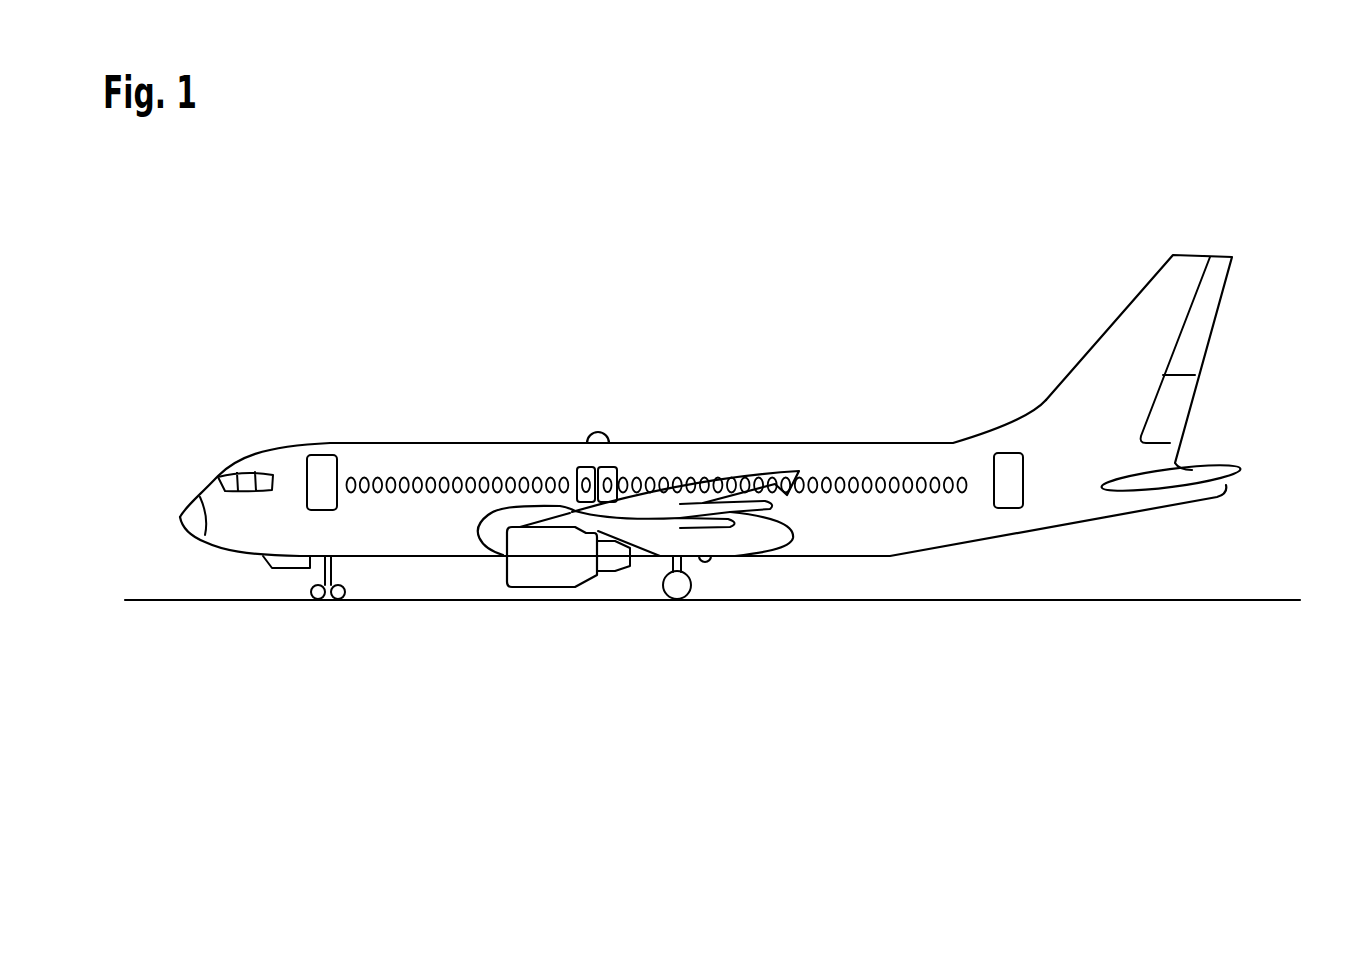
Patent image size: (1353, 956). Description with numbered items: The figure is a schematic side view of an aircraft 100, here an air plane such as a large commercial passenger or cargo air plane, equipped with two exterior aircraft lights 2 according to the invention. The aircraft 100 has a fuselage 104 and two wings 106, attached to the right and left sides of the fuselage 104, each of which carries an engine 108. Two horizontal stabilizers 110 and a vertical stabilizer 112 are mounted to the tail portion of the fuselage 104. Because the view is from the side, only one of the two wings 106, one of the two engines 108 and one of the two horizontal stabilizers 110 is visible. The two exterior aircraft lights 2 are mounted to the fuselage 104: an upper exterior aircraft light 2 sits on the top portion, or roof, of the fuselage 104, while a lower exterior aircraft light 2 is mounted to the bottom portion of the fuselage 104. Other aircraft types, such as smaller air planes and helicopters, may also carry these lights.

The aircraft 100 is at (556, 284).
The exterior aircraft light 2 is at (606, 432).
The fuselage 104 is at (870, 460).
The wing 106 is at (690, 507).
The engine 108 is at (552, 560).
The horizontal stabilizer 110 is at (1203, 473).
The vertical stabilizer 112 is at (1168, 292).